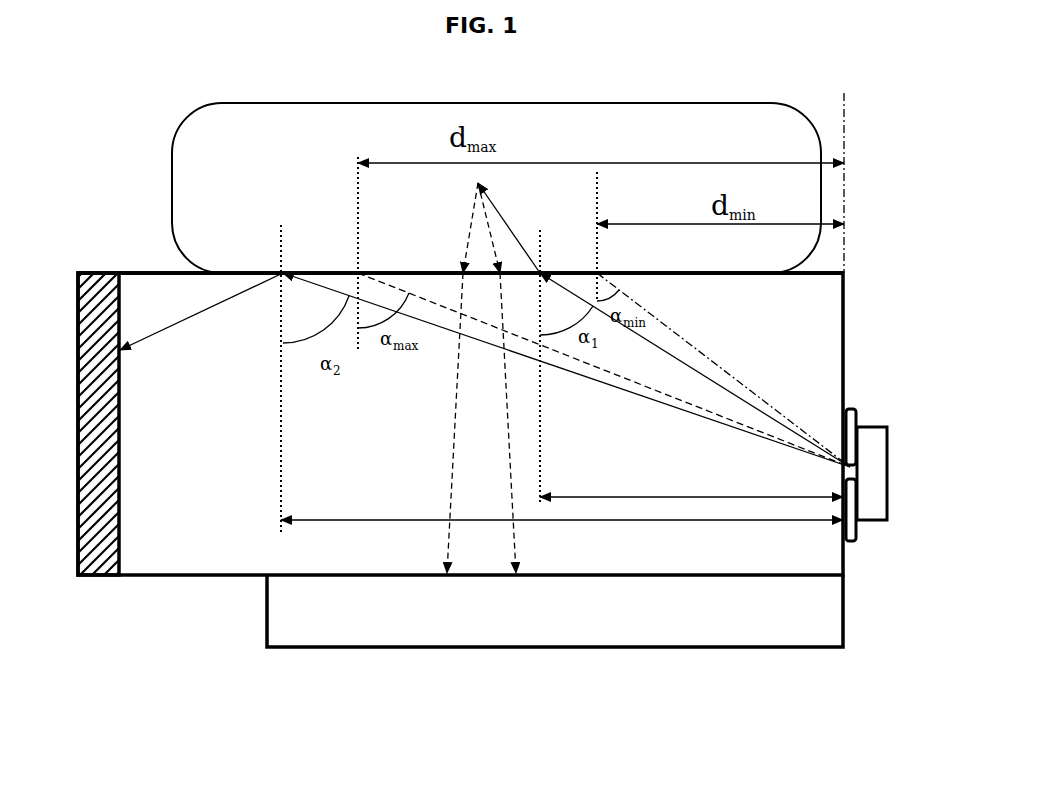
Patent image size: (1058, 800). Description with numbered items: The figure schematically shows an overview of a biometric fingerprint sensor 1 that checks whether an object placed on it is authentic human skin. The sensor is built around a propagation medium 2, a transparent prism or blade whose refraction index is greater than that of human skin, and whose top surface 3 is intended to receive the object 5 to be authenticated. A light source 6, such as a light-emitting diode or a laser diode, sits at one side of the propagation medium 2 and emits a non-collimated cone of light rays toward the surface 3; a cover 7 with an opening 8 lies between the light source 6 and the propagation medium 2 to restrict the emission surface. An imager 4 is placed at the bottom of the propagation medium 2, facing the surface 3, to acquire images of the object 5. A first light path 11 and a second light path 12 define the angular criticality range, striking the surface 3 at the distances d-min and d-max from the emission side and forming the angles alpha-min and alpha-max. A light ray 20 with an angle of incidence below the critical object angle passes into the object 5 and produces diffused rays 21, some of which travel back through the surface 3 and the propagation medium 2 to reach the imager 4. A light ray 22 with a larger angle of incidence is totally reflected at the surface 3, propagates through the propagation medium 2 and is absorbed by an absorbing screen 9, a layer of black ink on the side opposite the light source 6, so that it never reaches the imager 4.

The sensor 1 is at (168, 660).
The propagation medium 2 is at (838, 555).
The surface 3 is at (830, 262).
The imager 4 is at (775, 648).
The object 5 is at (740, 96).
The light source 6 is at (872, 520).
The cover 7 is at (851, 408).
The opening 8 is at (860, 471).
The absorbing screen 9 is at (97, 268).
The first light path 11 is at (757, 390).
The second light path 12 is at (600, 372).
The light ray 20 is at (790, 418).
The diffused rays 21 is at (471, 205).
The light ray 22 is at (557, 370).